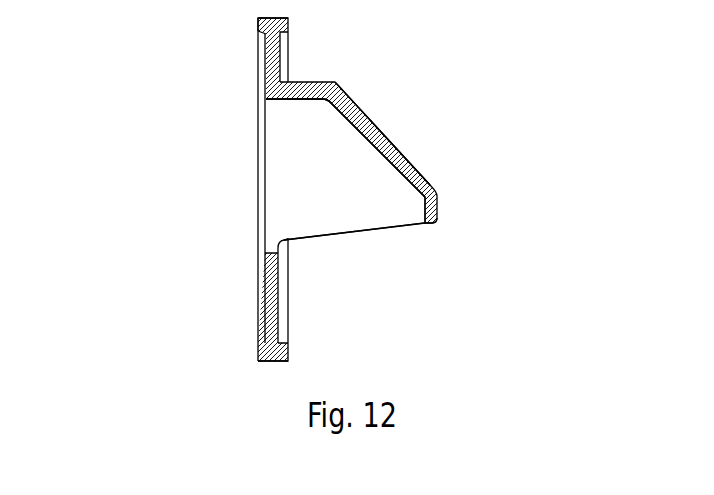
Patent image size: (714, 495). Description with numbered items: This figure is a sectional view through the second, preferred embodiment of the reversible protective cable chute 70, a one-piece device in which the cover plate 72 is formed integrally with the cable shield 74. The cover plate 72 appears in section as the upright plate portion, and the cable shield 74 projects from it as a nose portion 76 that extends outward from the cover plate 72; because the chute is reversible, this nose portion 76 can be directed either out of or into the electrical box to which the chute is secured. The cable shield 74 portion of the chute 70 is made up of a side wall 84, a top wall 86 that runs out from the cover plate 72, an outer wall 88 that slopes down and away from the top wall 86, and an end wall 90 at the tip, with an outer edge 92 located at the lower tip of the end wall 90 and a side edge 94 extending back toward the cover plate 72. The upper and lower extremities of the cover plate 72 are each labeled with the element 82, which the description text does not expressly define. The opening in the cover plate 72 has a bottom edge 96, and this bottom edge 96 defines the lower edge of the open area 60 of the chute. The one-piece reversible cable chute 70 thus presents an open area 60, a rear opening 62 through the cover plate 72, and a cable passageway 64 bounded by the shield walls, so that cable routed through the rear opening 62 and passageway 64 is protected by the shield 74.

The open area 60 is at (368, 224).
The rear opening 62 is at (272, 163).
The cable passageway 64 is at (322, 190).
The reversible protective cable chute 70 is at (125, 77).
The cover plate 72 is at (271, 52).
The cable shield 74 is at (368, 117).
The nose portion 76 is at (385, 138).
The flange end face 82 is at (288, 24).
The side wall 84 is at (336, 172).
The top wall 86 is at (308, 87).
The outer wall 88 is at (407, 160).
The end wall 90 is at (438, 212).
The outer edge 92 is at (432, 226).
The side edge 94 is at (330, 237).
The bottom edge 96 is at (265, 251).